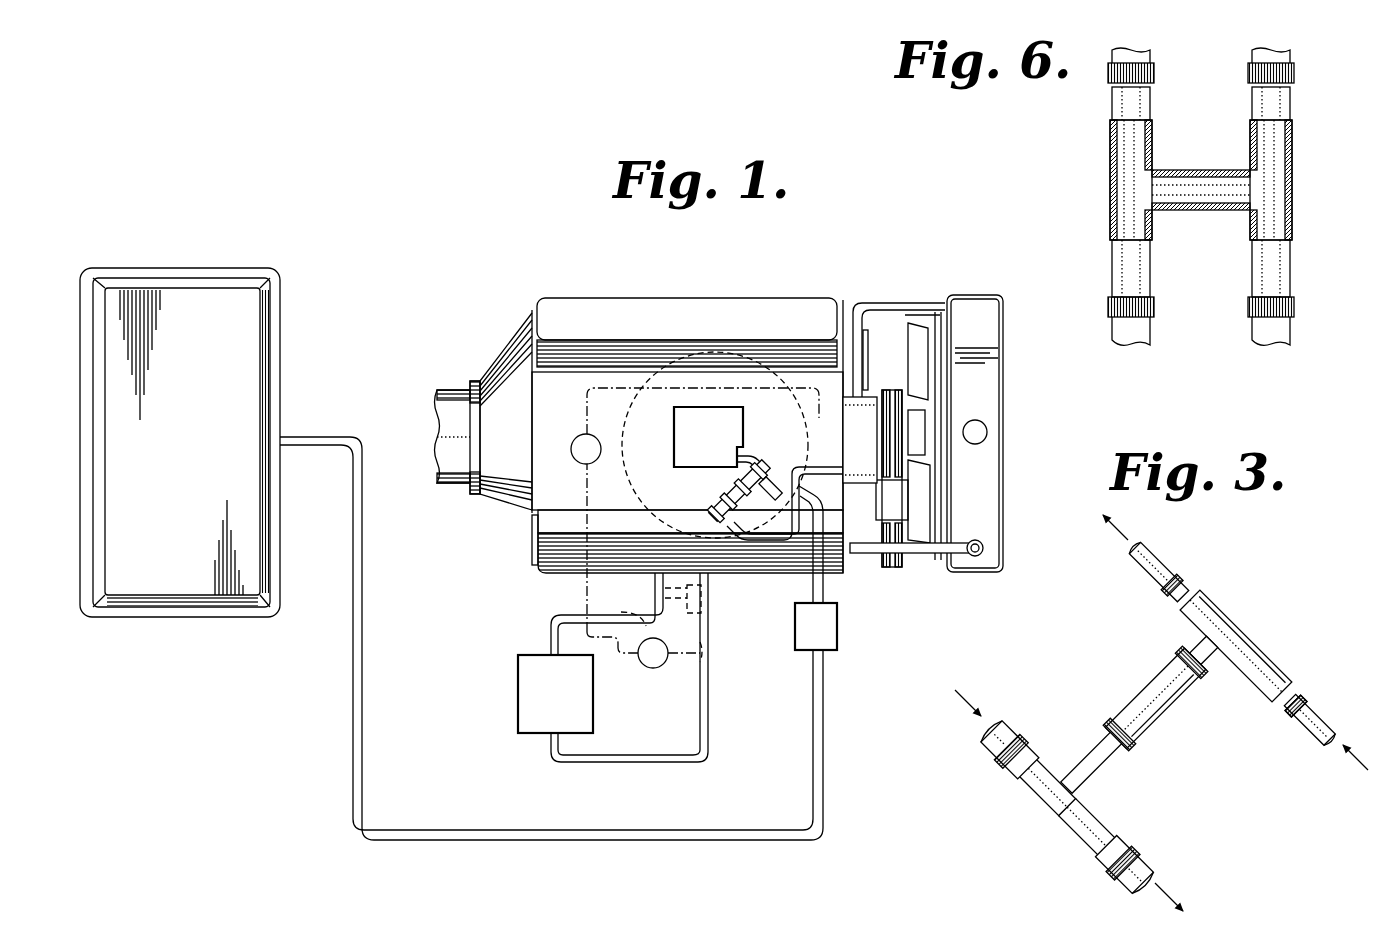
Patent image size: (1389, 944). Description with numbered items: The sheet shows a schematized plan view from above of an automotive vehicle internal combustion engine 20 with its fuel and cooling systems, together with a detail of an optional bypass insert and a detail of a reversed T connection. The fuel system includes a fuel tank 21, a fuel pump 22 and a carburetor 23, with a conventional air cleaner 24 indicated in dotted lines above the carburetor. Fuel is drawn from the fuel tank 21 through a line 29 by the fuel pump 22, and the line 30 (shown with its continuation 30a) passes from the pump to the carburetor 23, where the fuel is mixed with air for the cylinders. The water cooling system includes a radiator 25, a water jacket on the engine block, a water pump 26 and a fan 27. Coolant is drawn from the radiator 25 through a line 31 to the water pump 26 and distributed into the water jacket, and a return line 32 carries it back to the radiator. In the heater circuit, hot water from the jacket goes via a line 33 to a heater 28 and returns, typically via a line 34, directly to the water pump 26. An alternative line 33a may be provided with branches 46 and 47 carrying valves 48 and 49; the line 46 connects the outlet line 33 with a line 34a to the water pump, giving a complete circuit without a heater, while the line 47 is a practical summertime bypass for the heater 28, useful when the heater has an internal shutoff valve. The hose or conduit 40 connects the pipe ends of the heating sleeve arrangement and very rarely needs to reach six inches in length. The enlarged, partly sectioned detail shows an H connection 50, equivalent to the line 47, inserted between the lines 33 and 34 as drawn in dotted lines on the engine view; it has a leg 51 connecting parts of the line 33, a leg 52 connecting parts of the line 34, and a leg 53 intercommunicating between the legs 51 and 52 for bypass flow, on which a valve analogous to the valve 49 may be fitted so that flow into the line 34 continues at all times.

In FIG. 1, the internal combustion engine 20 is at (622, 287).
In FIG. 1, the fuel tank 21 is at (280, 268).
In FIG. 1, the fuel pump 22 is at (837, 635).
In FIG. 1, the carburetor 23 is at (673, 437).
In FIG. 1, the air cleaner 24 is at (755, 352).
In FIG. 1, the radiator 25 is at (1003, 400).
In FIG. 1, the water pump 26 is at (868, 398).
In FIG. 1, the fan 27 is at (936, 503).
In FIG. 1, the heater 28 is at (518, 714).
In FIG. 1, the line 29 is at (606, 842).
In FIG. 1, the line 30 is at (813, 590).
In FIG. 1, the fuel line end 30a is at (759, 458).
In FIG. 1, the line 31 is at (893, 302).
In FIG. 1, the return line 32 is at (928, 553).
In FIG. 1, the line 33 is at (552, 616).
In FIG. 6, the line 33 is at (1150, 60).
In FIG. 1, the alternative line 33a is at (647, 616).
In FIG. 1, the line 34 is at (708, 736).
In FIG. 6, the line 34 is at (1292, 57).
In FIG. 1, the line 34a is at (827, 487).
In FIG. 1, the hose or conduit 40 is at (735, 490).
In FIG. 1, the line 46 is at (582, 477).
In FIG. 1, the line 47 is at (686, 660).
In FIG. 1, the valve 48 is at (575, 443).
In FIG. 1, the valve 49 is at (640, 660).
In FIG. 1, the H connection 50 is at (705, 608).
In FIG. 6, the H connection 50 is at (1194, 180).
In FIG. 6, the leg 51 is at (1155, 152).
In FIG. 6, the leg 52 is at (1295, 192).
In FIG. 6, the leg 53 is at (1205, 208).